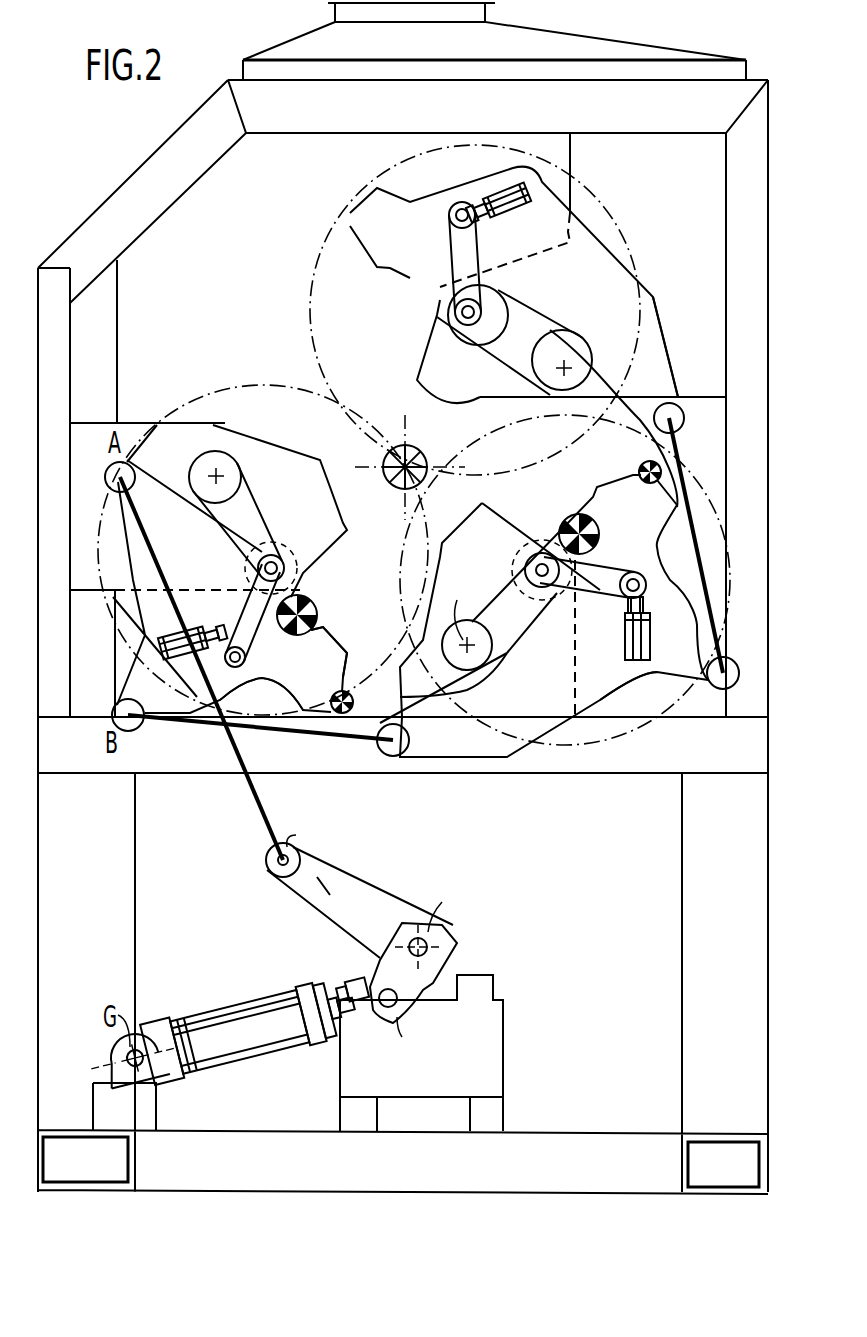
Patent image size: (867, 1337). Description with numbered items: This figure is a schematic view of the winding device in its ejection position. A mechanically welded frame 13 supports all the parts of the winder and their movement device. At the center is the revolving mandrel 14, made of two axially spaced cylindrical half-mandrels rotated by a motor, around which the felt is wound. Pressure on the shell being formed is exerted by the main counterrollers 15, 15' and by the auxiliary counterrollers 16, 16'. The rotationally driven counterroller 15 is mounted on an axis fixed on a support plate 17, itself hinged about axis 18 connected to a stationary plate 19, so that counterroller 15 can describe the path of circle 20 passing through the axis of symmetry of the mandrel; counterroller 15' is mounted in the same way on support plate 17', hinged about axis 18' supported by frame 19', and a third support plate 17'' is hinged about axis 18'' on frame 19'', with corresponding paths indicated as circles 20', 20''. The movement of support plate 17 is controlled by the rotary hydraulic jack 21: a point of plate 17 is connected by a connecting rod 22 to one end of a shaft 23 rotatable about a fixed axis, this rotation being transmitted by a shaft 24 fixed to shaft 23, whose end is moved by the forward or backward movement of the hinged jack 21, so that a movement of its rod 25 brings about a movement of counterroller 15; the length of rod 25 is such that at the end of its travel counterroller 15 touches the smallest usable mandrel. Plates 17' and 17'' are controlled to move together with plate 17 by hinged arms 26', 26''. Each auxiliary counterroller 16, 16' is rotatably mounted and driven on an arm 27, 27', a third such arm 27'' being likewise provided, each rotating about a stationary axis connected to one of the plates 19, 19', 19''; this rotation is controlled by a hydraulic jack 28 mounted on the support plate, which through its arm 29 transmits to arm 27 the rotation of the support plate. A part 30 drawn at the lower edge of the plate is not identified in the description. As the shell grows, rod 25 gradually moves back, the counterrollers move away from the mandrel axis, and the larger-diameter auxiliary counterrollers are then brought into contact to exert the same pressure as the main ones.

The frame 13 is at (750, 345).
The revolving mandrel 14 is at (423, 463).
The counterroller 15 is at (353, 681).
The counterroller 15' is at (628, 461).
The auxiliary counterroller 16 is at (314, 597).
The auxiliary counterroller 16' is at (593, 521).
The support plate 17 is at (336, 636).
The support plate 17' is at (627, 712).
The support plate 17'' is at (659, 331).
The axis 18 is at (232, 560).
The axis 18' is at (595, 608).
The axis 18'' is at (504, 253).
The stationary plate 19 is at (263, 524).
The frame 19' is at (565, 580).
The frame 19'' is at (475, 285).
The circle 20 is at (230, 528).
The carrier plate 20' is at (545, 543).
The carrier plate 20'' is at (519, 268).
The rotary hydraulic jack 21 is at (267, 1000).
The connecting rod 22 is at (253, 787).
The shaft 23 is at (373, 900).
The shaft 24 is at (413, 983).
The rod 25 is at (347, 993).
The hinged arm 26' is at (260, 735).
The hinged arm 26'' is at (710, 546).
The arm 27 is at (245, 513).
The arm 27' is at (507, 605).
The arm 27'' is at (524, 338).
The hydraulic jack 28 is at (165, 665).
The arm 29 is at (250, 610).
The cam 30 is at (224, 688).